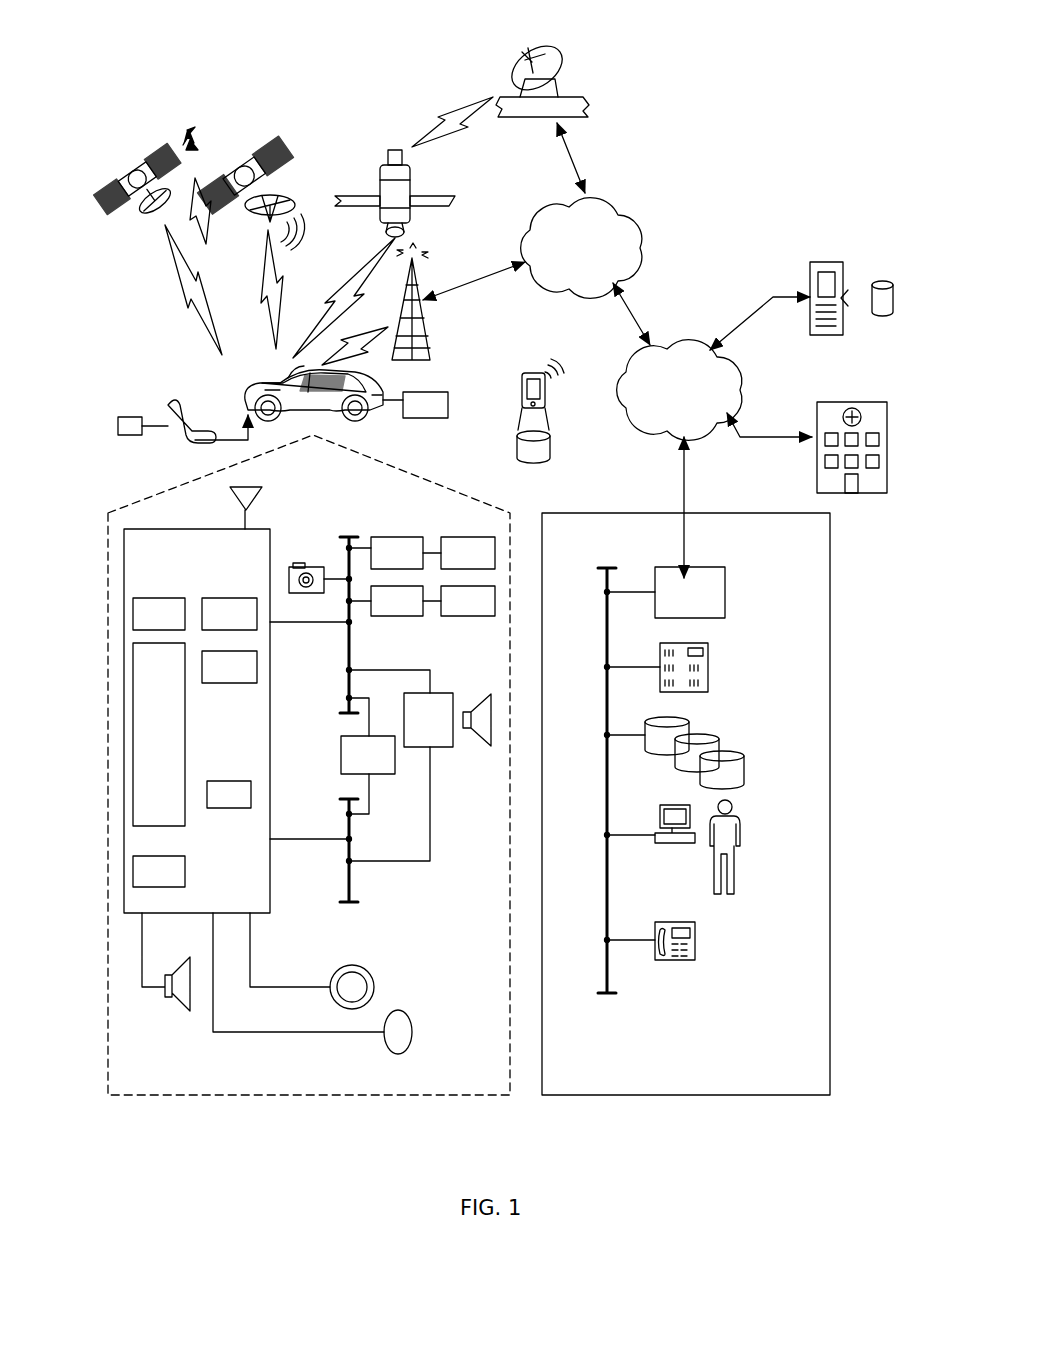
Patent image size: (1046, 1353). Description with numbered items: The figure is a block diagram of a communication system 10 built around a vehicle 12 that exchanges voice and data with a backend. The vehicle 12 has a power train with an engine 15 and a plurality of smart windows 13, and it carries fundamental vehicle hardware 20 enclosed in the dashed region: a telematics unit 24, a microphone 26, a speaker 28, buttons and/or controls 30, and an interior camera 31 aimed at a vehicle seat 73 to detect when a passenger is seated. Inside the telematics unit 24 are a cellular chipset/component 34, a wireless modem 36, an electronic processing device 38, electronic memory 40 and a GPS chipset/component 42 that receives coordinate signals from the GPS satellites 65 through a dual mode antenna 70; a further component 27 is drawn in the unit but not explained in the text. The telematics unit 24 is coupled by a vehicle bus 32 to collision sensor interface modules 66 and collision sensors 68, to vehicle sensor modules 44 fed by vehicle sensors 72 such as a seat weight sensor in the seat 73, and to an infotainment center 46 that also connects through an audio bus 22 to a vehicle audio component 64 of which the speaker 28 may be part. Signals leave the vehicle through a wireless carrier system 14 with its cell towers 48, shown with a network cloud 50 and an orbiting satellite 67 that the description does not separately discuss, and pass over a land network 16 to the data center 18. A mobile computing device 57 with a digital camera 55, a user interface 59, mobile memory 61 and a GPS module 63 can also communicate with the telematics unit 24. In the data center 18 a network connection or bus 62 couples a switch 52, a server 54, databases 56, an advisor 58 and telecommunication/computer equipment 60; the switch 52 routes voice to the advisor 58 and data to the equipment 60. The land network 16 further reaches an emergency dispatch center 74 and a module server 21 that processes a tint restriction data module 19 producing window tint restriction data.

The communication system 10 is at (105, 372).
The vehicle 12 is at (243, 405).
The smart windows 13 is at (302, 378).
The wireless carrier system 14 is at (665, 230).
The engine 15 is at (448, 405).
The land network 16 is at (738, 388).
The data center 18 is at (685, 1095).
The tint restriction data module 19 is at (888, 302).
The vehicle hardware 20 is at (292, 1100).
The module server 21 is at (826, 262).
The audio bus 22 is at (345, 885).
The telematics unit 24 is at (270, 755).
The microphone 26 is at (403, 1012).
The memory 27 is at (226, 808).
The speaker 28 is at (178, 1012).
The buttons and/or controls 30 is at (360, 965).
The interior camera 31 is at (312, 566).
The vehicle bus 32 is at (350, 655).
The cellular chipset/component 34 is at (158, 598).
The wireless modem 36 is at (225, 598).
The electronic processing device 38 is at (185, 735).
The electronic memory 40 is at (185, 868).
The GPS chipset/component 42 is at (257, 667).
The vehicle sensor modules 44 is at (410, 616).
The infotainment center 46 is at (341, 765).
The cell towers 48 is at (418, 290).
The wireless carrier network cloud 50 is at (530, 225).
The switch 52 is at (725, 592).
The server 54 is at (708, 670).
The digital camera 55 is at (530, 373).
The database 56 is at (745, 770).
The mobile computing device 57 is at (522, 385).
The advisor 58 is at (745, 835).
The user interface 59 is at (538, 383).
The telecommunication/computer equipment 60 is at (695, 940).
The mobile memory 61 is at (552, 440).
The network connection or bus 62 is at (607, 760).
The GPS module 63 is at (555, 365).
The vehicle audio component 64 is at (575, 92).
The GPS satellites 65 is at (208, 108).
The collision sensor interface modules 66 is at (388, 537).
The communication satellite 67 is at (412, 190).
The collision sensors 68 is at (460, 537).
The dual mode antenna 70 is at (250, 520).
The vehicle sensors 72 is at (118, 427).
The vehicle seats 73 is at (172, 447).
The emergency dispatch center 74 is at (887, 427).